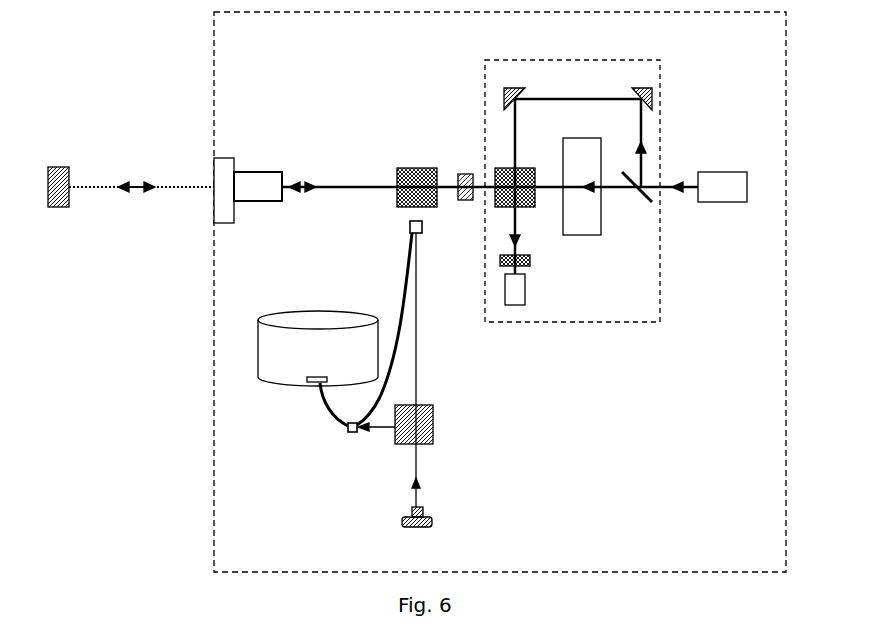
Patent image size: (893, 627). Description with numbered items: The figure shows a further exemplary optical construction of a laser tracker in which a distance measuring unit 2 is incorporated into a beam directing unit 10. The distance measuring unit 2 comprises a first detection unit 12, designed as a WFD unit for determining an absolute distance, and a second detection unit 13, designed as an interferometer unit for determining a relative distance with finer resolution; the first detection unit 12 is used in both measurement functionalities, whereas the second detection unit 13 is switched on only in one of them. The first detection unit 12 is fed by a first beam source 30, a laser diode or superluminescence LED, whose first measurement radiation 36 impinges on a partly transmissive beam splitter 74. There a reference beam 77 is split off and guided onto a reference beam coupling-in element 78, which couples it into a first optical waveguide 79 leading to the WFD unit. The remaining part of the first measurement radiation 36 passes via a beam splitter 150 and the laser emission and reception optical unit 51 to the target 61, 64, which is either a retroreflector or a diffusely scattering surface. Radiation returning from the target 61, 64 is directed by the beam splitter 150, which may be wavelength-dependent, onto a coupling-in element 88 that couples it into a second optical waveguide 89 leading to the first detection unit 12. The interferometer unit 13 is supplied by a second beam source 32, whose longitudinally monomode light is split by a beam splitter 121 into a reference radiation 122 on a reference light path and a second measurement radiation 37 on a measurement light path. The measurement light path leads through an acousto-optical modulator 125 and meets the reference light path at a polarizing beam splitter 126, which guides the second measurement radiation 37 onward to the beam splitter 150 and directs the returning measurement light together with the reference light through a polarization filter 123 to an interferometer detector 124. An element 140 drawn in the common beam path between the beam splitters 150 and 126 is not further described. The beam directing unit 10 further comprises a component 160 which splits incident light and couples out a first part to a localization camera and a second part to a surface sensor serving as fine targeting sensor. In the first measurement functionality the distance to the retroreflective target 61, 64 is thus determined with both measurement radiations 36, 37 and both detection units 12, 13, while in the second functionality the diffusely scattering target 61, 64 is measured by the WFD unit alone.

The distance measuring unit 2 is at (746, 41).
The beam directing unit 10 is at (263, 54).
The first detection unit 12 is at (280, 353).
The second detection unit 13 is at (576, 175).
The first beam source 30 is at (452, 499).
The second beam source 32 is at (737, 165).
The first measurement radiation 36 is at (420, 274).
The second measurement radiation 37 is at (527, 186).
The measuring and reference beams 36, 37 is at (141, 163).
The laser emission and reception optical unit 51 is at (183, 220).
The reflector target 61, 64 is at (100, 207).
The partly transmissive beam splitter 74 is at (434, 433).
The reference beam 77 is at (382, 423).
The reference beam coupling-in element 78 is at (302, 482).
The first optical waveguide 79 is at (308, 457).
The coupling-in element 88 is at (367, 236).
The second optical waveguide 89 is at (362, 329).
The beam splitter 121 is at (675, 227).
The reference radiation 122 is at (568, 69).
The polarization filter 123 is at (555, 308).
The interferometer detector 124 is at (558, 332).
The acousto-optical modulator 125 is at (645, 230).
The polarizing beam splitter 126 is at (476, 146).
The shutter 140 is at (434, 161).
The beam splitter 150 is at (382, 165).
The component 160 is at (273, 167).